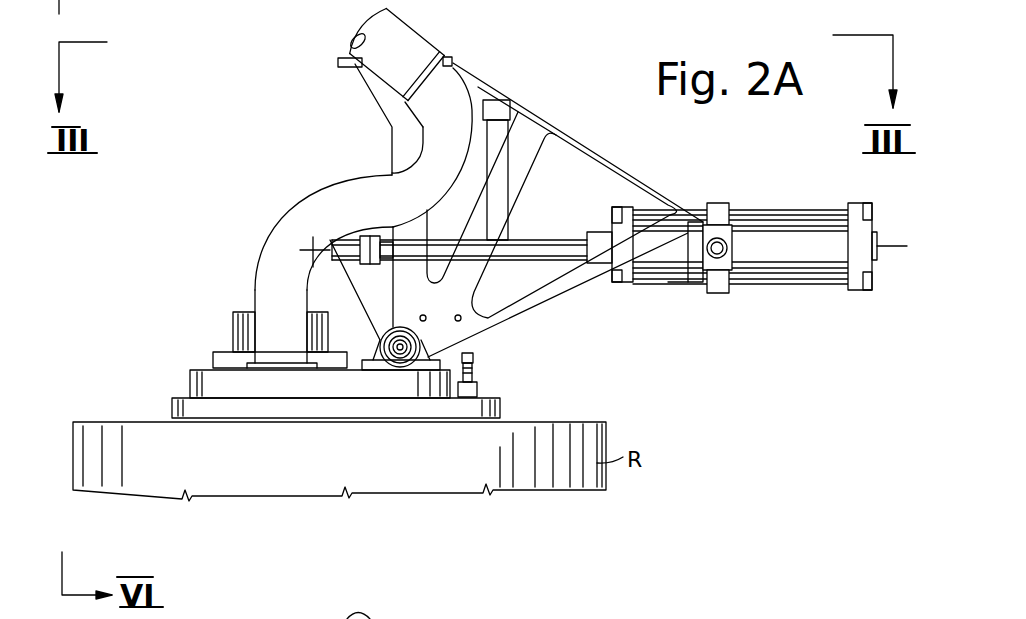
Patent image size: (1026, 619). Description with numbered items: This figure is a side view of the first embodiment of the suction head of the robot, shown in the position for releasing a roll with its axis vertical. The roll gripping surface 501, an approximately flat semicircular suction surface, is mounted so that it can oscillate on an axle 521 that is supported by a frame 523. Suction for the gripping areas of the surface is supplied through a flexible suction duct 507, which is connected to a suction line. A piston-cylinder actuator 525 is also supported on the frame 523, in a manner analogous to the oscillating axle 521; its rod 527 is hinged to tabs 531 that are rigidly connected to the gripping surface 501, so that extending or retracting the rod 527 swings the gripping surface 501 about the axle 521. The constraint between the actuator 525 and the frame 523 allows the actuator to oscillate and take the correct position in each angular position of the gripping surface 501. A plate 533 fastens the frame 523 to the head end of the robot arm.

The roll gripping surface 501 is at (515, 412).
The flexible suction duct 507 is at (337, 192).
The axle 521 is at (433, 332).
The frame 523 is at (567, 138).
The piston-cylinder actuator 525 is at (750, 235).
The rod 527 is at (540, 248).
The tabs 531 is at (255, 290).
The plate 533 is at (445, 57).